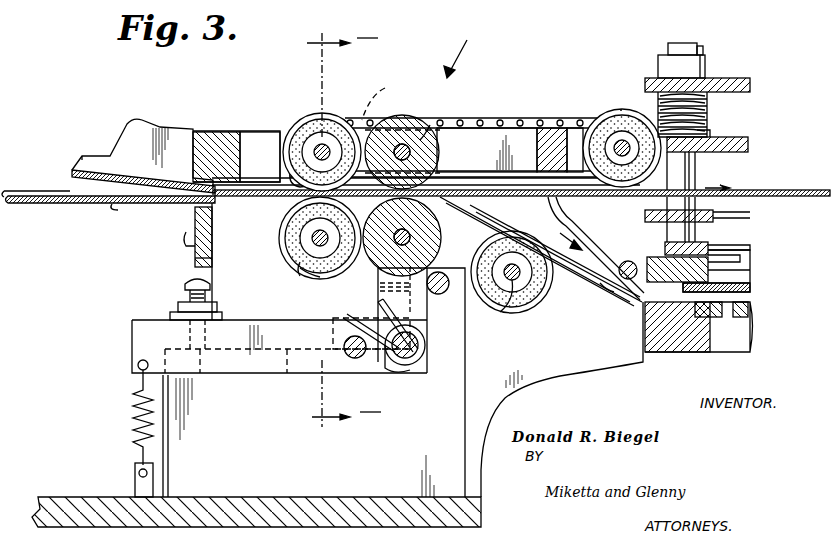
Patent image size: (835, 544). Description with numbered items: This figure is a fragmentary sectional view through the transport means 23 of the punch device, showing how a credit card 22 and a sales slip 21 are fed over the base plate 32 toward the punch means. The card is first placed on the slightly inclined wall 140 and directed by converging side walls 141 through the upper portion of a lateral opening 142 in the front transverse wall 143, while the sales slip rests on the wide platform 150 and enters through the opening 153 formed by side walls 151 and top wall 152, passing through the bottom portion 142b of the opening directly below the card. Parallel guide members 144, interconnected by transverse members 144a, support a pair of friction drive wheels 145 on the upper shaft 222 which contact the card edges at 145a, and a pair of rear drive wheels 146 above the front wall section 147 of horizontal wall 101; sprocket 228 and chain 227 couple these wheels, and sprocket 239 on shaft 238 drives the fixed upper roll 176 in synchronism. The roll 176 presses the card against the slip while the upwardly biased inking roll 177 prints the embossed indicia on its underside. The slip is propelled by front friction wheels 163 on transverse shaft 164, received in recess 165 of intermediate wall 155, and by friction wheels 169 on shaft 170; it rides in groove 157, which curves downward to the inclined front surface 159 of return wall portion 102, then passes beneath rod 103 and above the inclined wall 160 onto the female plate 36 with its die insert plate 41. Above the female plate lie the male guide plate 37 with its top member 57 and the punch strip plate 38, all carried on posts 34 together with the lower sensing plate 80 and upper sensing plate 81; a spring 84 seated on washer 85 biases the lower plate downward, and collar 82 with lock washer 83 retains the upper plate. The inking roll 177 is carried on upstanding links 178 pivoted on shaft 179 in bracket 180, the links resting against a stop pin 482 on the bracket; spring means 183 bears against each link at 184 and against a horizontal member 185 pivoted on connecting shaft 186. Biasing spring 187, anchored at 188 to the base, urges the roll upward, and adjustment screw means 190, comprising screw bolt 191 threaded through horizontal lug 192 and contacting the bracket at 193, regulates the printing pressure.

The base plate 32 is at (80, 500).
The bracket 180 is at (403, 382).
The horizontal member 185 is at (280, 322).
The contact point 193 is at (203, 378).
The spring means 183 is at (343, 328).
The bearing point 184 is at (378, 302).
The upstanding link 178 is at (380, 285).
The shaft 179 is at (418, 363).
The connecting shaft 186 is at (357, 358).
The pin 482 is at (438, 295).
The screw bolt 191 is at (185, 287).
The adjustment screw means 190 is at (175, 307).
The horizontal lug 192 is at (180, 318).
The biasing spring 187 is at (133, 404).
The spring connection 188 is at (136, 470).
The platform 150 is at (52, 203).
The opening 153 is at (48, 184).
The top wall 152 is at (72, 173).
The side walls 151 is at (110, 208).
The converging side walls 141 is at (138, 120).
The inclined wall 140 is at (65, 143).
The lateral opening 142 is at (192, 172).
The guide members 144 is at (258, 130).
The transverse members 144a is at (222, 132).
The frictional contact 145a is at (260, 157).
The front transverse wall 143 is at (197, 263).
The bottom portion of opening 142b is at (212, 210).
The intermediate wall 155 is at (205, 236).
The horizontal wall 101 is at (745, 194).
The chain 227 is at (497, 118).
The credit card 22 is at (518, 192).
The friction drive wheels 145 is at (305, 118).
The upper shaft 222 is at (324, 145).
The sprocket 239 is at (346, 231).
The upper roll 176 is at (398, 116).
The shaft 238 is at (420, 140).
The sprocket 228 is at (598, 118).
The rear frictional drive wheels 146 is at (625, 110).
The transport means 23 is at (468, 56).
The transverse shaft 164 is at (312, 240).
The front friction wheels 163 is at (296, 262).
The recess 165 is at (302, 275).
The inking roll 177 is at (441, 245).
The friction wheels 169 is at (518, 300).
The transverse shaft 170 is at (505, 310).
The sales slip 21 is at (502, 212).
The front wall section 147 is at (592, 198).
The groove 157 is at (548, 262).
The inclined front surface 159 is at (566, 268).
The inclined wall 160 is at (608, 292).
The return wall portion 102 is at (585, 245).
The rod 103 is at (630, 257).
The posts 34 is at (685, 43).
The lock washer 83 is at (703, 50).
The collar 82 is at (705, 70).
The upper sensing plate 81 is at (750, 88).
The spring 84 is at (708, 108).
The washer 85 is at (710, 133).
The lower sensing plate 80 is at (748, 146).
The punch strip plate 38 is at (750, 215).
The top member 57 is at (705, 246).
The male guide plate 37 is at (750, 268).
The female plate 36 is at (680, 352).
The die insert plate 41 is at (715, 318).